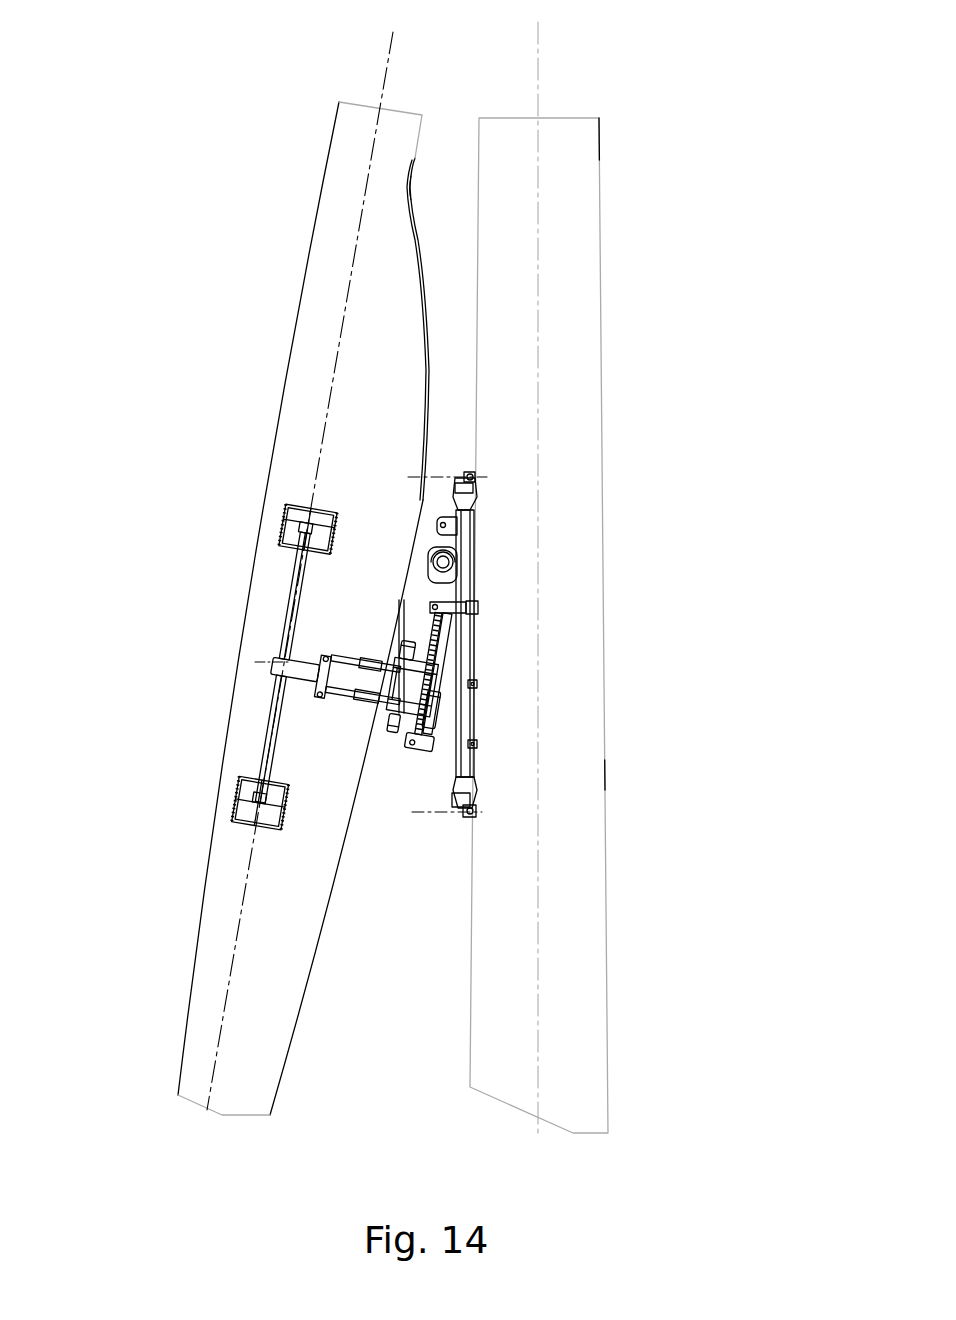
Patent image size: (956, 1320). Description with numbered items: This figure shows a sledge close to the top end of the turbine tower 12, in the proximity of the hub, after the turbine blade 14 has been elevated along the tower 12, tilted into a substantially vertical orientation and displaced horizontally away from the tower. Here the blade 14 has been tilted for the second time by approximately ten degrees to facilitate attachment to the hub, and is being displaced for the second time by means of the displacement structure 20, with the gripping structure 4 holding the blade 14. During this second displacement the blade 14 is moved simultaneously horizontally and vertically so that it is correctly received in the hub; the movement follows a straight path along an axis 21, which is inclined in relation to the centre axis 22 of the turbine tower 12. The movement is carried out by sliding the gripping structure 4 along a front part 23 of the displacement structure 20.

The blade handling device / carriage 4 is at (273, 718).
The turbine tower 12 is at (588, 318).
The turbine blade 14 is at (317, 323).
The displacement structure 20 is at (435, 612).
The axis 21 is at (390, 57).
The centre axis of the turbine tower 22 is at (538, 65).
The front part of the displacement structure 23 is at (433, 650).